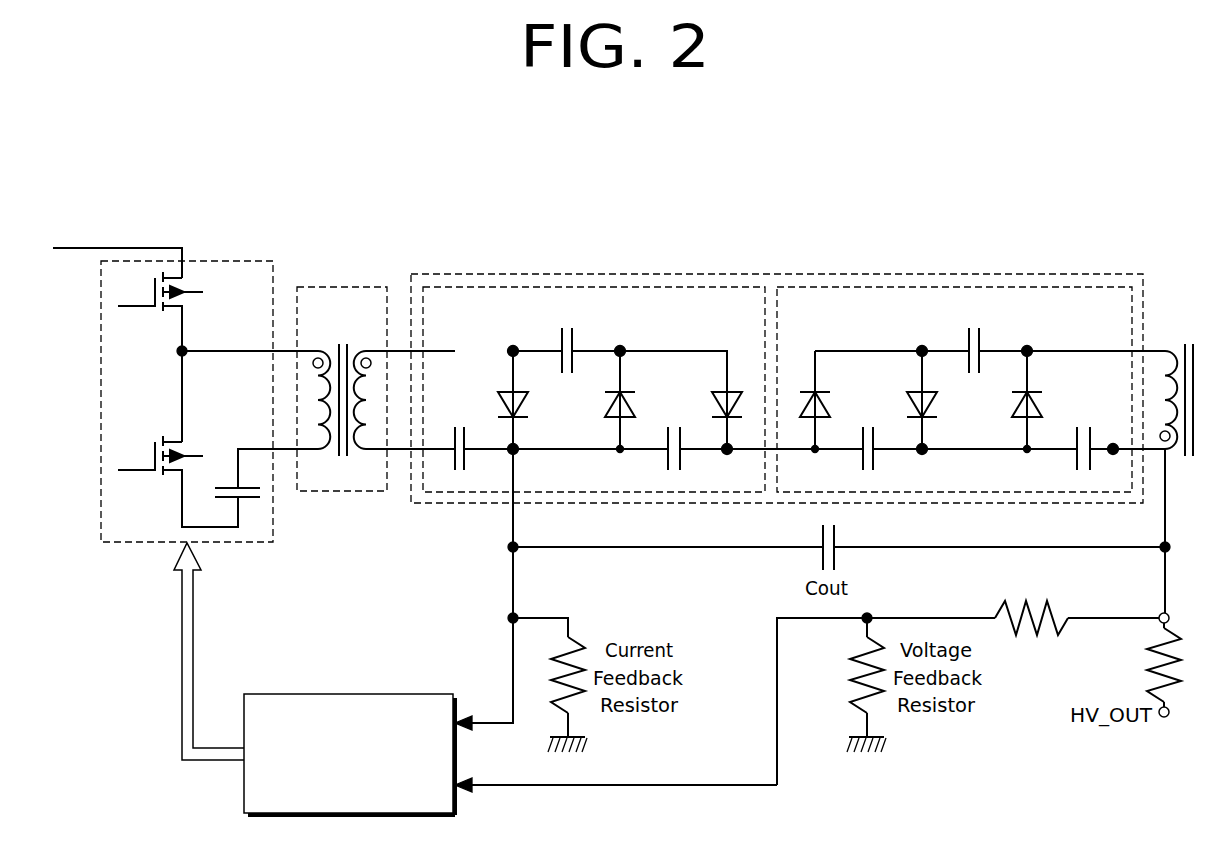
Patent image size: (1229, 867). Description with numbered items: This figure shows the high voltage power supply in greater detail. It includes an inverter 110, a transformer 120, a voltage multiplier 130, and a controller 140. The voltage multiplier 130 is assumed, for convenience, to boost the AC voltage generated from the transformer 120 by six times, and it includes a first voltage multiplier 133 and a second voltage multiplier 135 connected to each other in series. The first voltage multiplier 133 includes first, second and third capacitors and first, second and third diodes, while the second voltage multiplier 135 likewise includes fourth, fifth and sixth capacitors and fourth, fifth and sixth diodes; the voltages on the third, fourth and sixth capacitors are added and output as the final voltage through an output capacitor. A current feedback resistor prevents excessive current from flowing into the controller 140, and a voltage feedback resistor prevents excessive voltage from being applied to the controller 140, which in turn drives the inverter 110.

The inverter 110 is at (233, 261).
The transformer 120 is at (369, 287).
The voltage multiplier 130 is at (790, 274).
The first voltage multiplier 133 is at (616, 287).
The second voltage multiplier 135 is at (985, 287).
The controller 140 is at (363, 694).